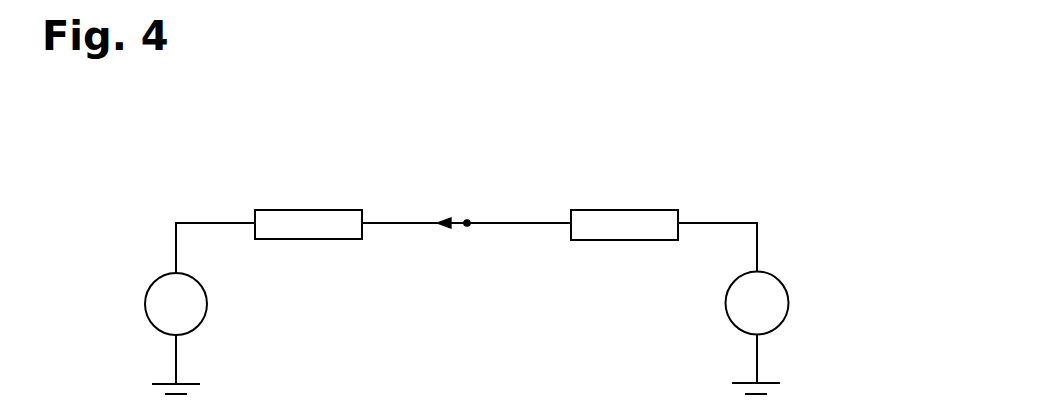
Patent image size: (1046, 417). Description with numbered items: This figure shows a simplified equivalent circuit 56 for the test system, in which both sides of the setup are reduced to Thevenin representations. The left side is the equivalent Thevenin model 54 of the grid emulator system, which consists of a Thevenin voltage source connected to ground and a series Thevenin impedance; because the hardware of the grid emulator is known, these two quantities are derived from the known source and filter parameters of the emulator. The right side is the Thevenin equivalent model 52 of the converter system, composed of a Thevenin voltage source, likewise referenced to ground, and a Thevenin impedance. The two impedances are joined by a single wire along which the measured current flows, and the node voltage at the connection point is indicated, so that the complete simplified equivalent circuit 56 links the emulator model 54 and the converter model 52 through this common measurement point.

The equivalent Thevenin model 54 is at (158, 160).
The Thevenin equivalent model 52 is at (790, 186).
The simplified equivalent circuit 56 is at (840, 218).